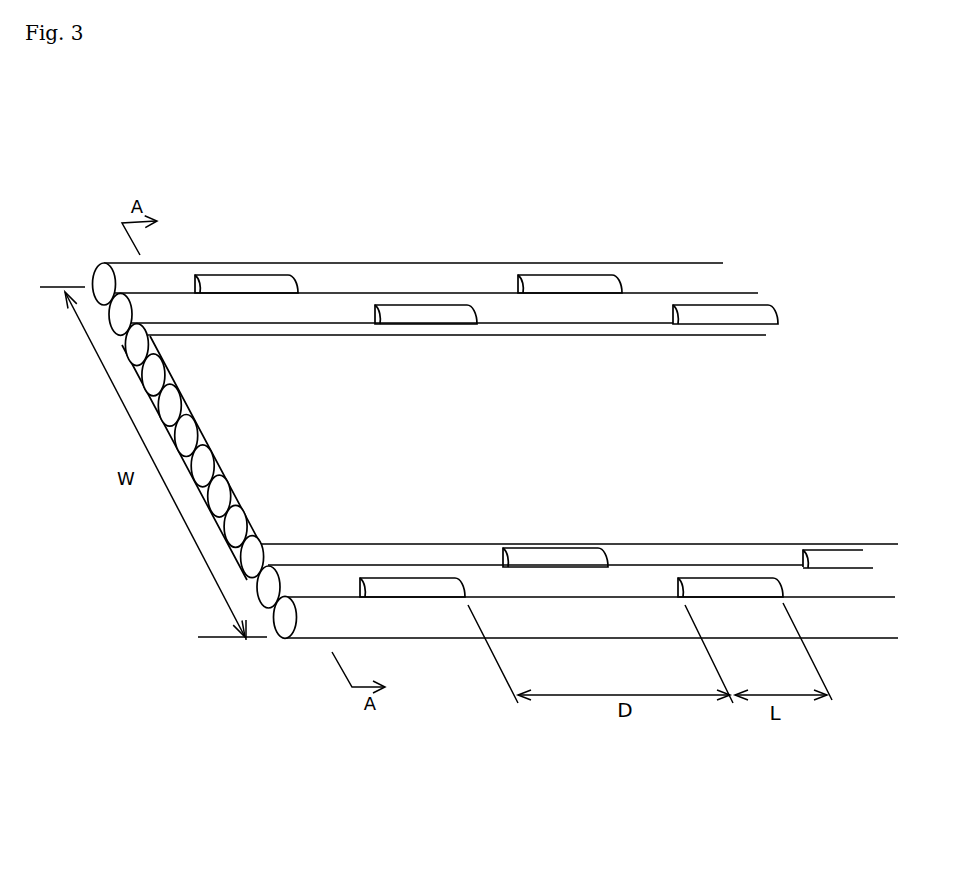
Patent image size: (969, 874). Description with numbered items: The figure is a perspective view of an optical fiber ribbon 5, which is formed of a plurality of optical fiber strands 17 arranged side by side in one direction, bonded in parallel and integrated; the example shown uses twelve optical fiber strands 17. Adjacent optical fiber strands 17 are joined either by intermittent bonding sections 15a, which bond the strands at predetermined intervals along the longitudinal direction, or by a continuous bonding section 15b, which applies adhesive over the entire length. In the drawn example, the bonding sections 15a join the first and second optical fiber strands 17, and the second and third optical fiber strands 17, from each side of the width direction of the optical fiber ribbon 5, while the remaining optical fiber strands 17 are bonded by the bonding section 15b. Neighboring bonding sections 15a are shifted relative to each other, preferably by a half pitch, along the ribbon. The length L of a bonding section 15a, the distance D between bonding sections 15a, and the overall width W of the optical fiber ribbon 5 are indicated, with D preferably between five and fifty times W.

The optical fiber ribbon 5 is at (496, 390).
The optical fiber strand 17 is at (317, 276).
The bonding section 15a is at (423, 318).
The bonding section 15b is at (755, 356).